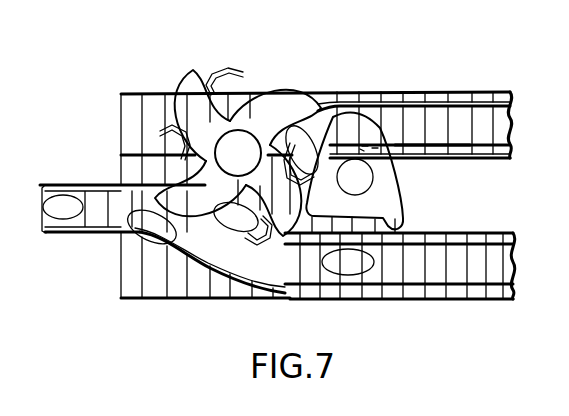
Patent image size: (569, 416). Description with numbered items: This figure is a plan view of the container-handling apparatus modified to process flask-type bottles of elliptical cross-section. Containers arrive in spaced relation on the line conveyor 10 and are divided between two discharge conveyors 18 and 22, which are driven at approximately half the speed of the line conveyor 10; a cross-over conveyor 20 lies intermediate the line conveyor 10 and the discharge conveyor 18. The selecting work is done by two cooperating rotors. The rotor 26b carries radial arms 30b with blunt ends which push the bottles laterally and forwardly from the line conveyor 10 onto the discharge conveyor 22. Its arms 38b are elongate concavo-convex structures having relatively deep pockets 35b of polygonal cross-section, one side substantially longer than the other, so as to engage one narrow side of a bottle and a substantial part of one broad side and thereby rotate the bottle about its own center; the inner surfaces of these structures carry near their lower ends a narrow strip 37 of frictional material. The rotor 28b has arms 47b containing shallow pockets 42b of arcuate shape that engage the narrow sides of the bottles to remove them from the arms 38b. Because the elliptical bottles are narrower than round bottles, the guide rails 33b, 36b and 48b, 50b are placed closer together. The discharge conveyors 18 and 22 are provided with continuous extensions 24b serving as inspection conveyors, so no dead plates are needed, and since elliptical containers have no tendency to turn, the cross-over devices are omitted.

The line conveyor 10 is at (77, 221).
The discharge conveyor 18 is at (132, 118).
The cross-over conveyor 20 is at (132, 170).
The discharge conveyor 22 is at (125, 282).
The continuous extensions 24b is at (502, 122).
The rotor 26b is at (252, 132).
The rotor 28b is at (398, 216).
The radial arms 30b is at (187, 78).
The guide rail 33b is at (177, 267).
The pockets 35b is at (306, 55).
The guide rail 36b is at (393, 240).
The narrow strip of frictional material 37 is at (177, 143).
The arms 38b is at (245, 58).
The shallow pockets 42b is at (372, 220).
The arms 47b is at (367, 127).
The guide rail 48b is at (395, 103).
The guide rail 50b is at (443, 146).